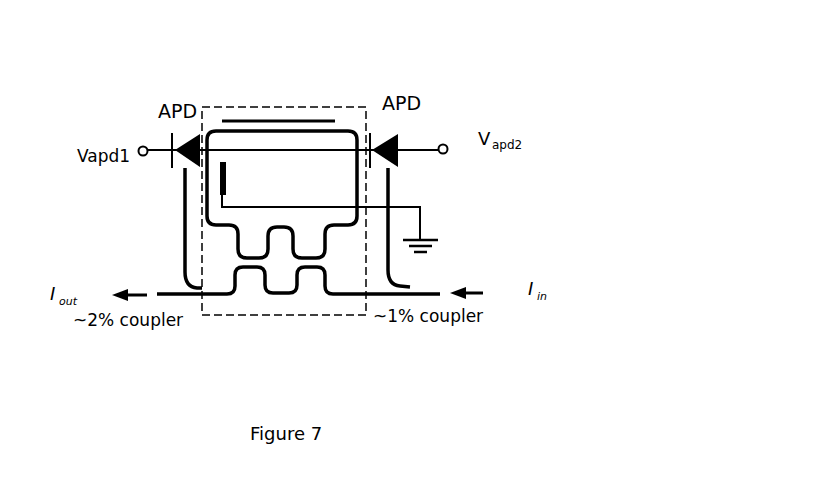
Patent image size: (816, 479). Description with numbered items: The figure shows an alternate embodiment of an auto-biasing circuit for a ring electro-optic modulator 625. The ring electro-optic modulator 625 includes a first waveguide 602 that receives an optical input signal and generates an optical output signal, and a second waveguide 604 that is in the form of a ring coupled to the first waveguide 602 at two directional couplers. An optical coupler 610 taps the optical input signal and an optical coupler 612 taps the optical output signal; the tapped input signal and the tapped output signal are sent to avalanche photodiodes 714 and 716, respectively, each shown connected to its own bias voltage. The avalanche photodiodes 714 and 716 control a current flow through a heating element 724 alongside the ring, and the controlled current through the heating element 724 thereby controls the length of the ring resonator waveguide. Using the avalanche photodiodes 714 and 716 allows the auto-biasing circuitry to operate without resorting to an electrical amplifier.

The first waveguide 602 is at (340, 290).
The second waveguide 604 is at (217, 222).
The optical coupler 610 is at (393, 277).
The optical coupler 612 is at (188, 278).
The ring electro-optic modulator 625 is at (252, 107).
The avalanche photodiode 714 is at (398, 143).
The avalanche photodiode 716 is at (193, 140).
The heating element 724 is at (217, 175).